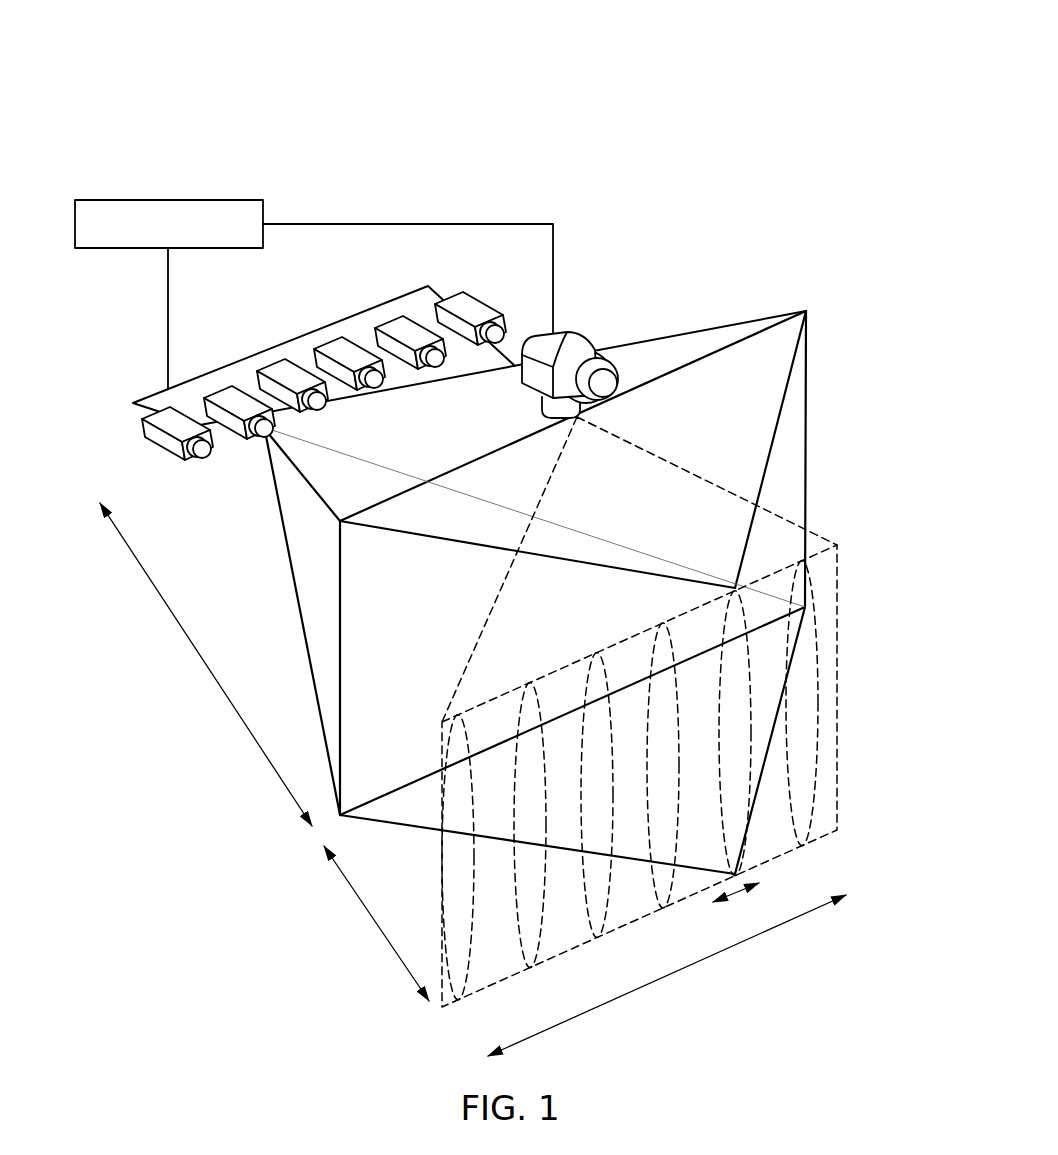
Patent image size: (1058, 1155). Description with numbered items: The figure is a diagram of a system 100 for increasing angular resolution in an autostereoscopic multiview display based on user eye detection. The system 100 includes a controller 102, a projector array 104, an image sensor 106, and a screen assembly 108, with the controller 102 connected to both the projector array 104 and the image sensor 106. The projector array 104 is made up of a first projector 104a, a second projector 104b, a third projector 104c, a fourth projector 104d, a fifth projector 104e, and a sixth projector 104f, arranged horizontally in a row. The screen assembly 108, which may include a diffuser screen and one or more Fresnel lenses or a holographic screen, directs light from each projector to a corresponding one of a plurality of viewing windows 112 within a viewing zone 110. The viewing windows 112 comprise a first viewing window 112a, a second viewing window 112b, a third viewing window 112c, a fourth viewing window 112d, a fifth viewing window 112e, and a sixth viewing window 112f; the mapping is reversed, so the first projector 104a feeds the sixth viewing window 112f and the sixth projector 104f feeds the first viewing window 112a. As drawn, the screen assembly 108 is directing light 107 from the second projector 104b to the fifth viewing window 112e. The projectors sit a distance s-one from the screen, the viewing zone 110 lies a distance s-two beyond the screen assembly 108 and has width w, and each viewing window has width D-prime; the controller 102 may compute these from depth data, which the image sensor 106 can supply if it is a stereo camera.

The system 100 is at (202, 67).
The controller 102 is at (158, 200).
The projector array 104 is at (422, 350).
The first projector 104a is at (144, 431).
The second projector 104b is at (240, 393).
The third projector 104c is at (302, 362).
The fourth projector 104d is at (360, 344).
The fifth projector 104e is at (417, 321).
The sixth projector 104f is at (475, 311).
The image sensor 106 is at (582, 333).
The light 107 is at (717, 325).
The screen assembly 108 is at (807, 380).
The viewing zone 110 is at (837, 550).
The plurality of viewing windows 112 is at (668, 755).
The first viewing window 112a is at (453, 735).
The second viewing window 112b is at (540, 713).
The third viewing window 112c is at (612, 655).
The fourth viewing window 112d is at (687, 633).
The fifth viewing window 112e is at (750, 702).
The sixth viewing window 112f is at (817, 643).